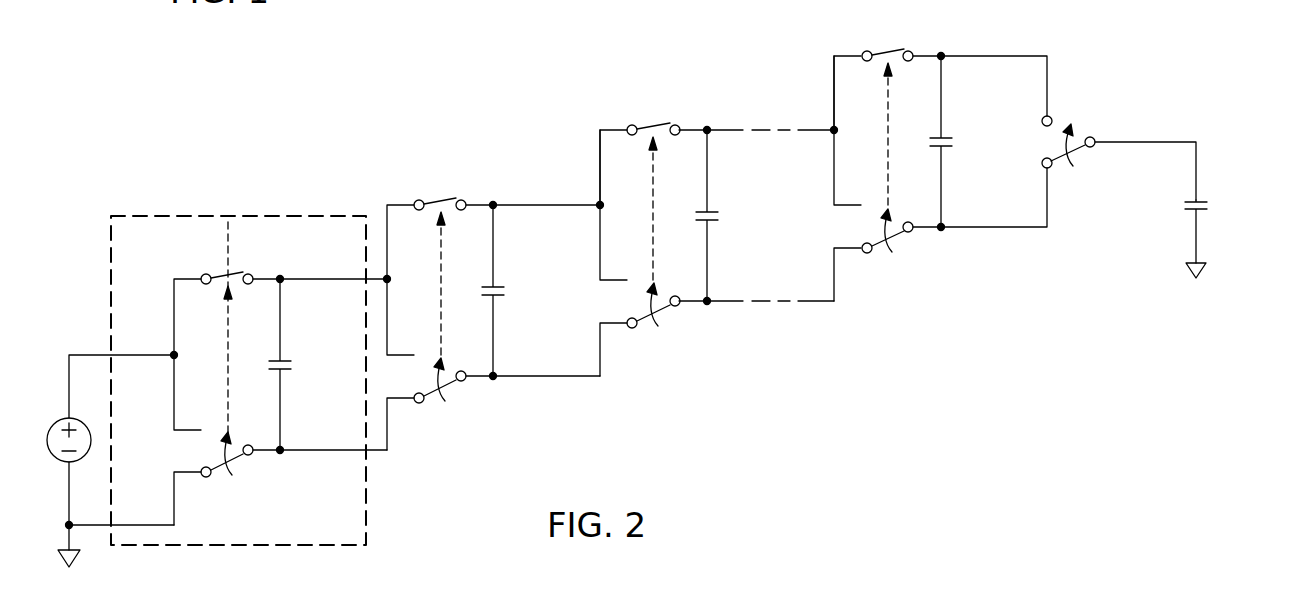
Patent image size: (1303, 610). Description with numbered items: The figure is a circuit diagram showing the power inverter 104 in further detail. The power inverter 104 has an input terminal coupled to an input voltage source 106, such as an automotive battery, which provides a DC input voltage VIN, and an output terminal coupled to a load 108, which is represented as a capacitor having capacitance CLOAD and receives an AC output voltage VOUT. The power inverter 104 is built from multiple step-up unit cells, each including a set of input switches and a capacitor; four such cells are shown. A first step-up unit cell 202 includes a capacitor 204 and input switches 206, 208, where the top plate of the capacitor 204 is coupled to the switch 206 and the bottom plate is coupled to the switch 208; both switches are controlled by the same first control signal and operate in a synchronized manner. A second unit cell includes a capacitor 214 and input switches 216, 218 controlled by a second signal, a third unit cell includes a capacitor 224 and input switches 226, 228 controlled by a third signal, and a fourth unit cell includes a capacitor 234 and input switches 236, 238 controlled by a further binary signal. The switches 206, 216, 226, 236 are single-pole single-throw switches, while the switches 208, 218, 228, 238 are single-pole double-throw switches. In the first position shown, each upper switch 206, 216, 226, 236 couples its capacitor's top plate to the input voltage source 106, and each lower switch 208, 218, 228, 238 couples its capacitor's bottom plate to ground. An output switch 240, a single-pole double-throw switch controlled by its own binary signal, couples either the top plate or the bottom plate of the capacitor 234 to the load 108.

The power inverter 104 is at (485, 55).
The input voltage source 106 is at (55, 463).
The load 108 is at (1208, 207).
The first step-up unit cell 202 is at (185, 210).
The capacitor 204 is at (293, 367).
The input switch 206 is at (217, 276).
The input switch 208 is at (240, 457).
The capacitor 214 is at (507, 288).
The input switch 216 is at (432, 202).
The input switch 218 is at (448, 385).
The capacitor 224 is at (720, 215).
The input switch 226 is at (645, 127).
The input switch 228 is at (665, 312).
The capacitor 234 is at (953, 143).
The input switch 236 is at (878, 53).
The input switch 238 is at (898, 233).
The output switch 240 is at (1050, 143).